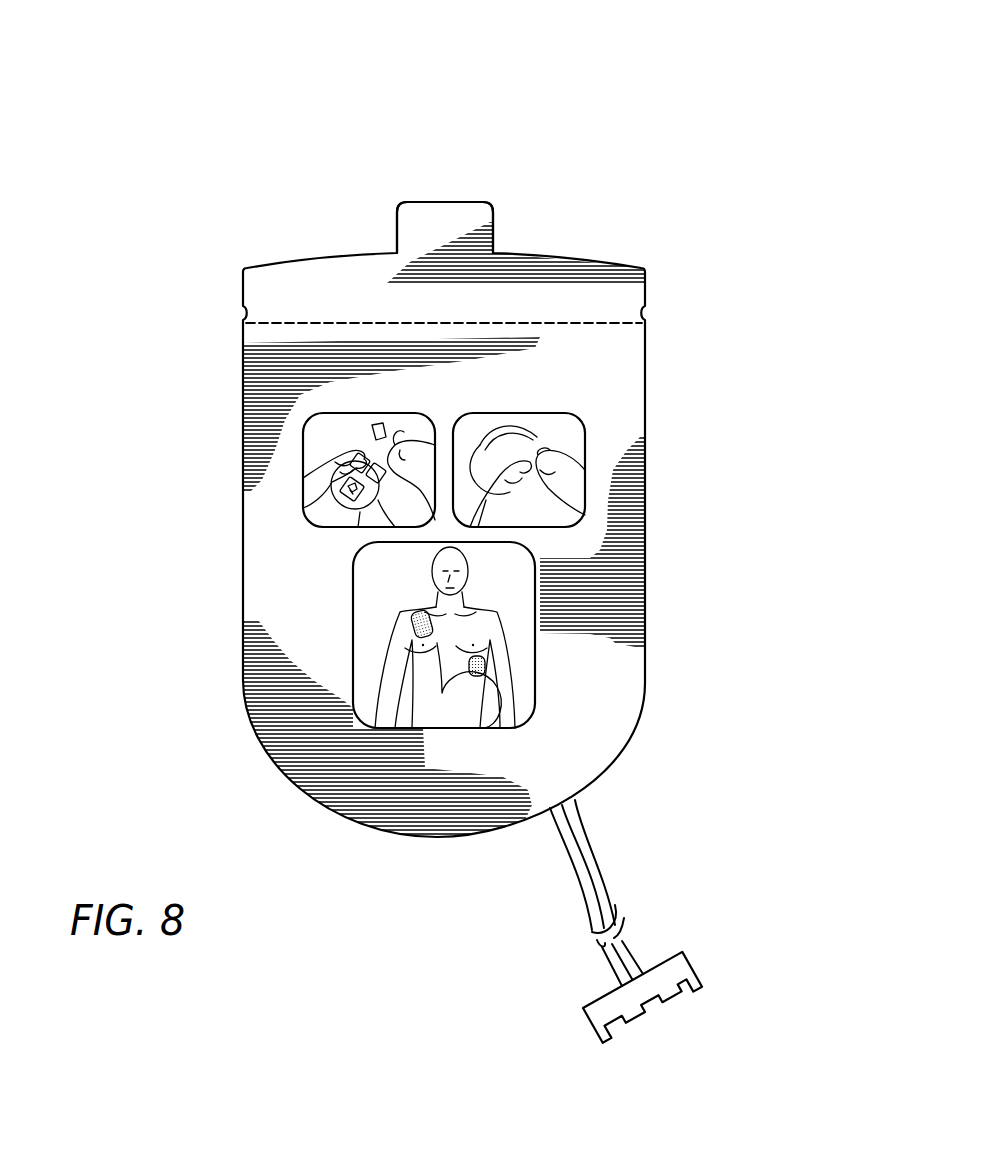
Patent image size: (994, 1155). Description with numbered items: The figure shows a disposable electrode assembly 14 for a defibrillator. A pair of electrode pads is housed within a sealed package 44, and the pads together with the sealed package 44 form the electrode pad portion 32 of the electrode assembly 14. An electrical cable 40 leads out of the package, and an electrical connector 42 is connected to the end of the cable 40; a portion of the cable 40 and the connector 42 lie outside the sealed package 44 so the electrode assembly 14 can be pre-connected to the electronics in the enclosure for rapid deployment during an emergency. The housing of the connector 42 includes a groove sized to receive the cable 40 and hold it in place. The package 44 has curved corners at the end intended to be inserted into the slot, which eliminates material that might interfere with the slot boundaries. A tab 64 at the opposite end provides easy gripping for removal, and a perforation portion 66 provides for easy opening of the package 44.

The electrode assembly 14 is at (669, 127).
The electrode pad portion 32 is at (160, 497).
The electrical cable 40 is at (593, 860).
The electrical connector 42 is at (690, 967).
The sealed package 44 is at (622, 695).
The tab 64 is at (443, 202).
The perforation portion 66 is at (613, 323).